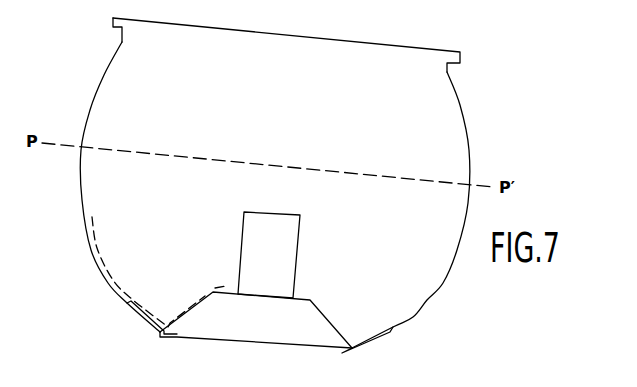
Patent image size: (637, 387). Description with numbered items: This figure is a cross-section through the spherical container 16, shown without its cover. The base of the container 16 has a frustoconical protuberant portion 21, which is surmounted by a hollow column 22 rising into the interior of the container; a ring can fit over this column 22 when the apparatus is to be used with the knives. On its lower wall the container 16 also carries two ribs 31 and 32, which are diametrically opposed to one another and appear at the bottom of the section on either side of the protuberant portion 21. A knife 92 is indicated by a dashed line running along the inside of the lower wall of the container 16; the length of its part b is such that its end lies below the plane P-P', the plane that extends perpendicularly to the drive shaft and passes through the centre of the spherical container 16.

The container 16 is at (101, 96).
The frustoconical protuberant portion 21 is at (194, 300).
The hollow column 22 is at (241, 247).
The rib 31 is at (148, 321).
The rib 32 is at (382, 338).
The knife 92 is at (112, 270).